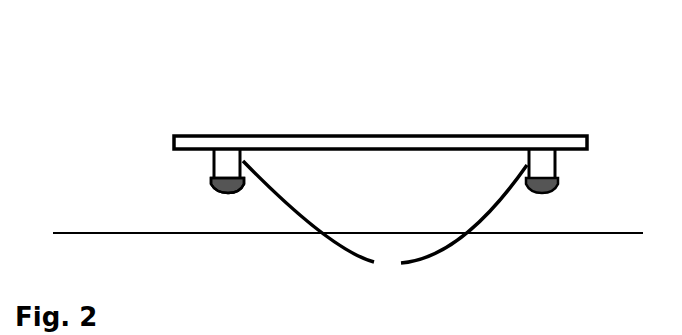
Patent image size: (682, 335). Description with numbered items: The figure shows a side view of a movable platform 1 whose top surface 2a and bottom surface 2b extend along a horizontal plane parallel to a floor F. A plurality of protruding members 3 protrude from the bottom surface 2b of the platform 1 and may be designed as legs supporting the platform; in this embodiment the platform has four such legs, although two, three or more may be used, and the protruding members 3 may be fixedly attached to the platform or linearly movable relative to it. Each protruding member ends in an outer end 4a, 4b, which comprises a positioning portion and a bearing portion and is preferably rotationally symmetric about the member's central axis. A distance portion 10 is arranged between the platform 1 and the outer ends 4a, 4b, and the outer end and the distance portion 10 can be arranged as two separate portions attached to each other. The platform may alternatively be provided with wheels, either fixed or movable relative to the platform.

The movable platform 1 is at (568, 135).
The top surface 2a is at (363, 136).
The bottom surface 2b is at (364, 150).
The protruding members 3 is at (385, 223).
The outer end 4a is at (217, 199).
The outer end 4b is at (548, 200).
The distance portion 10 is at (222, 165).
The floor F is at (339, 237).